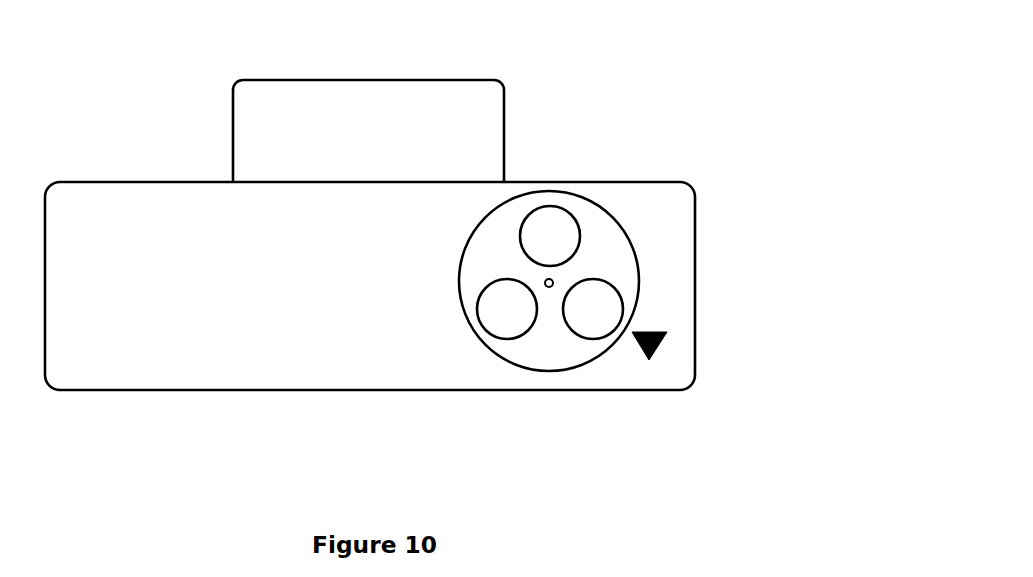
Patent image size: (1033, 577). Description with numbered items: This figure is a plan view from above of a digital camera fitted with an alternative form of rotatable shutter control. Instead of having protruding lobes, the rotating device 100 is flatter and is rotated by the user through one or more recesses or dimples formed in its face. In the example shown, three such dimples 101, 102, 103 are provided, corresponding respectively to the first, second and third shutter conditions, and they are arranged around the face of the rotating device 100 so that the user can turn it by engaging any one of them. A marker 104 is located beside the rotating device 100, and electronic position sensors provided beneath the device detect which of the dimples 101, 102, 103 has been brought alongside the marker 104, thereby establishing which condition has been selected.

The rotating device 100 is at (605, 252).
The dimple 101 is at (616, 299).
The dimple 102 is at (521, 235).
The dimple 103 is at (487, 323).
The marker 104 is at (663, 347).